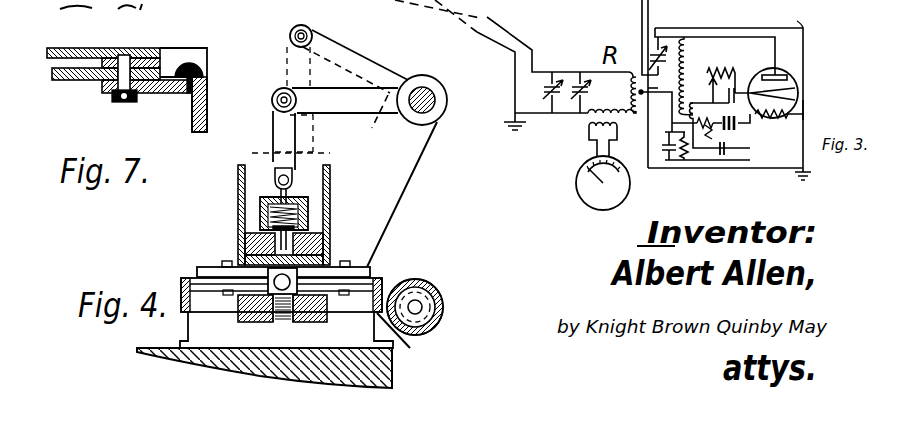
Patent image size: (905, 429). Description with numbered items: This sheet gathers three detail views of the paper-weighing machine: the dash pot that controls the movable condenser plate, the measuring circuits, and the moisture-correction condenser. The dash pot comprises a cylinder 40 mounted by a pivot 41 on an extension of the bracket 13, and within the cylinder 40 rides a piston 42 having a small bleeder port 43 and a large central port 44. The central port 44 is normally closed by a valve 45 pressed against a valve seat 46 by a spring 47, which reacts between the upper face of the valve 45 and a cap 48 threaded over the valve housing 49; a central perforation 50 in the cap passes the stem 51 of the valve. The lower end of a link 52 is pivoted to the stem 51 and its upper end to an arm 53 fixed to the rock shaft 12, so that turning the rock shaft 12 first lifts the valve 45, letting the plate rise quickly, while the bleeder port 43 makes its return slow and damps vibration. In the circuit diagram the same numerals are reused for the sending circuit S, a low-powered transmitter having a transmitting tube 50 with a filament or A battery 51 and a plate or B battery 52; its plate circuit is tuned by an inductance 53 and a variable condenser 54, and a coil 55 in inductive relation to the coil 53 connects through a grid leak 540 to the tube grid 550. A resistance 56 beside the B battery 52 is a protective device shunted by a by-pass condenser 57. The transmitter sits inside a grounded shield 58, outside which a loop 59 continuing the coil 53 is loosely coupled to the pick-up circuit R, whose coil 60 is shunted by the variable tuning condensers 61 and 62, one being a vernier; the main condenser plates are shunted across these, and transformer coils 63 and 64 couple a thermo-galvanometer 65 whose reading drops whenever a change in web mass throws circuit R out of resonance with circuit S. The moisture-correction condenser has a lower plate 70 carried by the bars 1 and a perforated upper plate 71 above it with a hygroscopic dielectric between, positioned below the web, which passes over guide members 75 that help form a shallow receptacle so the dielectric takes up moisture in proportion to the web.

In FIG. 7, the bars 1 is at (205, 102).
In FIG. 7, the lower plate 70 is at (86, 80).
In FIG. 7, the upper plate 71 is at (98, 48).
In FIG. 7, the guide members 75 is at (192, 55).
In FIG. 4, the rock shaft 12 is at (428, 86).
In FIG. 4, the bracket 13 is at (430, 161).
In FIG. 4, the cylinder 40 is at (245, 242).
In FIG. 4, the pivot 41 is at (240, 308).
In FIG. 4, the piston 42 is at (326, 215).
In FIG. 4, the bleeder port 43 is at (330, 232).
In FIG. 4, the central port 44 is at (243, 253).
In FIG. 4, the valve 45 is at (312, 200).
In FIG. 4, the valve seat 46 is at (261, 208).
In FIG. 4, the spring 47 is at (245, 175).
In FIG. 4, the cap 48 is at (303, 196).
In FIG. 4, the valve housing 49 is at (268, 222).
In FIG. 4, the central perforation; transmitting tube 50 is at (298, 170).
In FIG. 3, the central perforation; transmitting tube 50 is at (758, 75).
In FIG. 4, the valve stem; filament (A) battery 51 is at (273, 122).
In FIG. 3, the valve stem; filament (A) battery 51 is at (730, 72).
In FIG. 4, the link; plate (B) battery 52 is at (272, 101).
In FIG. 3, the link; plate (B) battery 52 is at (740, 129).
In FIG. 4, the arm; inductance coil 53 is at (328, 86).
In FIG. 3, the arm; inductance coil 53 is at (688, 65).
In FIG. 3, the variable condenser 54 is at (664, 50).
In FIG. 3, the coil 55 is at (703, 100).
In FIG. 3, the resistance 56 is at (712, 139).
In FIG. 3, the condenser 57 is at (728, 157).
In FIG. 3, the grounded shield 58 is at (806, 72).
In FIG. 3, the loop 59 is at (638, 108).
In FIG. 3, the coil 60 is at (637, 77).
In FIG. 3, the variable tuning condenser 61 is at (585, 75).
In FIG. 3, the variable tuning condenser 62 is at (555, 75).
In FIG. 3, the transformer coil 63 is at (590, 115).
In FIG. 3, the transformer coil 64 is at (589, 145).
In FIG. 3, the thermo-galvanometer 65 is at (592, 185).
In FIG. 3, the grid leak 540 is at (670, 156).
In FIG. 3, the tube grid 550 is at (822, 103).